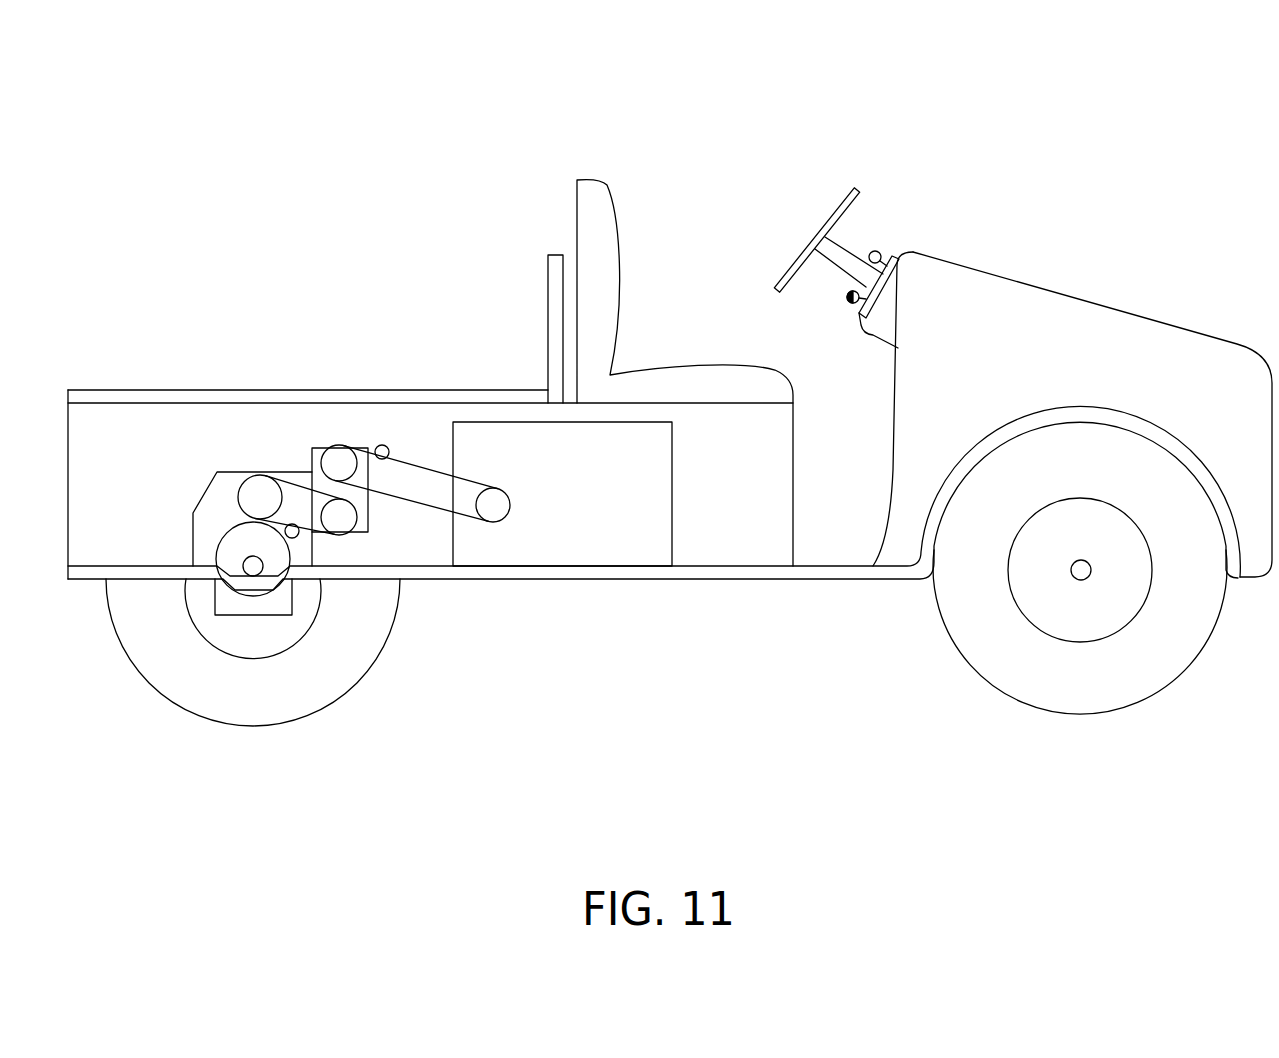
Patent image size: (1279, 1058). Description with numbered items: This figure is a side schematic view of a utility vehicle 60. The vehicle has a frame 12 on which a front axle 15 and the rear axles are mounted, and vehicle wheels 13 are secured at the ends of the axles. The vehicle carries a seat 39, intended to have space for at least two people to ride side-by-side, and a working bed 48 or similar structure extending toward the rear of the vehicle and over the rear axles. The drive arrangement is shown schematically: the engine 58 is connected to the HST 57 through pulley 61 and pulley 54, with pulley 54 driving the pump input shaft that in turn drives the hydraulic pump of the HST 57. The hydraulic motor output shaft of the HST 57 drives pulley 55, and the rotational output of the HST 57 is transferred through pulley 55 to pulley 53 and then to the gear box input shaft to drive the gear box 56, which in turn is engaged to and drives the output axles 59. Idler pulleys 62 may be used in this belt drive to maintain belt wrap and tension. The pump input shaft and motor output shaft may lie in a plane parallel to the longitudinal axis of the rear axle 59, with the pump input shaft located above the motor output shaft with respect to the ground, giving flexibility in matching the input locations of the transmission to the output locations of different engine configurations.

The utility vehicle 60 is at (1130, 148).
The frame 12 is at (833, 580).
The vehicle wheels 13 is at (253, 717).
The front axle 15 is at (1092, 570).
The seat 39 is at (623, 277).
The working bed 48 is at (457, 389).
The pulley 53 is at (255, 485).
The pulley 54 is at (337, 455).
The pulley 55 is at (343, 523).
The gear box 56 is at (193, 530).
The HST 57 is at (310, 460).
The engine 58 is at (612, 488).
The output axles 59 is at (253, 567).
The pulley 61 is at (500, 510).
The idler pulleys 62 is at (382, 445).